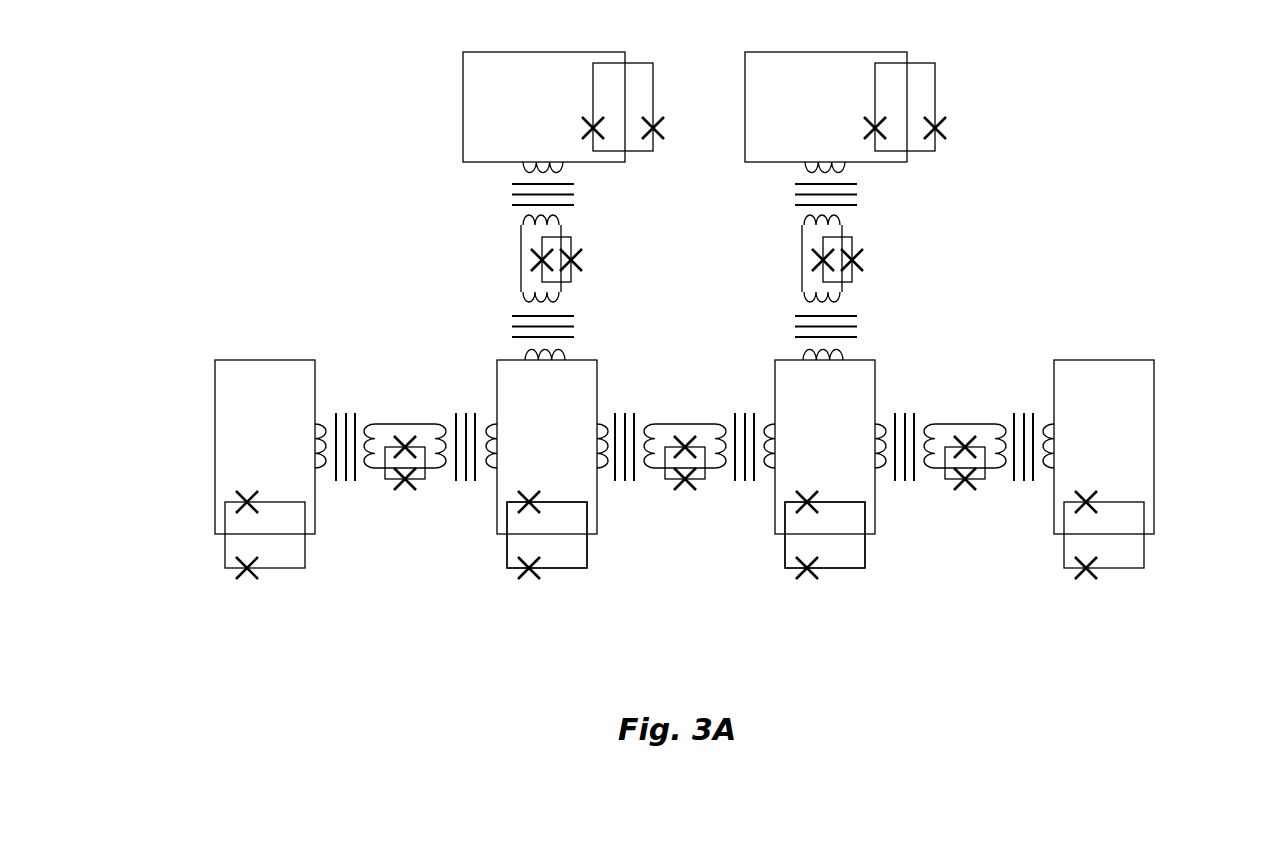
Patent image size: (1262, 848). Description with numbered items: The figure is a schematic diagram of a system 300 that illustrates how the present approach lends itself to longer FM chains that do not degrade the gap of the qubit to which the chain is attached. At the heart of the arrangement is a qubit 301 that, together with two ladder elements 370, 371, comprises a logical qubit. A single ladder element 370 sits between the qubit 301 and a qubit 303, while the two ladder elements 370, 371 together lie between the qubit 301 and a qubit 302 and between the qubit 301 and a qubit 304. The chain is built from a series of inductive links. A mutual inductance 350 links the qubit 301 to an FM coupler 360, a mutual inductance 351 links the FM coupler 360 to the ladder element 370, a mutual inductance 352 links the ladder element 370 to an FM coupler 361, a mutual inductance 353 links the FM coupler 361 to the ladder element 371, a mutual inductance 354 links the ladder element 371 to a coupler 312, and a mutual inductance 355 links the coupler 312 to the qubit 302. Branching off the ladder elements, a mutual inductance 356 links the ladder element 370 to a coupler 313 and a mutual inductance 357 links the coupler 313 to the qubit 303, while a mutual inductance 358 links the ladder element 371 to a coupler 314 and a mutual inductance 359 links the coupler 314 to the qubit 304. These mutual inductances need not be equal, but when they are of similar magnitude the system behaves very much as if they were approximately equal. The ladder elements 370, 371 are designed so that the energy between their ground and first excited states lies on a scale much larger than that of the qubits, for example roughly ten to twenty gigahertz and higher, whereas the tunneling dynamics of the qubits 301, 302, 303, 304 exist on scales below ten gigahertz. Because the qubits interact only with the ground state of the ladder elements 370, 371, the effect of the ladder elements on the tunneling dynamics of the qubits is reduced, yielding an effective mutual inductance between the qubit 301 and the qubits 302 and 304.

The system 300 is at (337, 85).
The qubit 301 is at (263, 358).
The qubit 302 is at (1107, 357).
The qubit 303 is at (455, 117).
The qubit 304 is at (946, 104).
The coupler 312 is at (970, 503).
The coupler 313 is at (505, 253).
The coupler 314 is at (872, 253).
The mutual inductance 350 is at (345, 400).
The mutual inductance 351 is at (465, 492).
The mutual inductance 352 is at (625, 493).
The mutual inductance 353 is at (745, 492).
The mutual inductance 354 is at (910, 492).
The mutual inductance 355 is at (1028, 400).
The mutual inductance 356 is at (505, 317).
The mutual inductance 357 is at (503, 194).
The mutual inductance 358 is at (865, 318).
The mutual inductance 359 is at (864, 194).
The FM coupler 360 is at (405, 502).
The FM coupler 361 is at (685, 503).
The ladder element 370 is at (525, 592).
The ladder element 371 is at (853, 583).